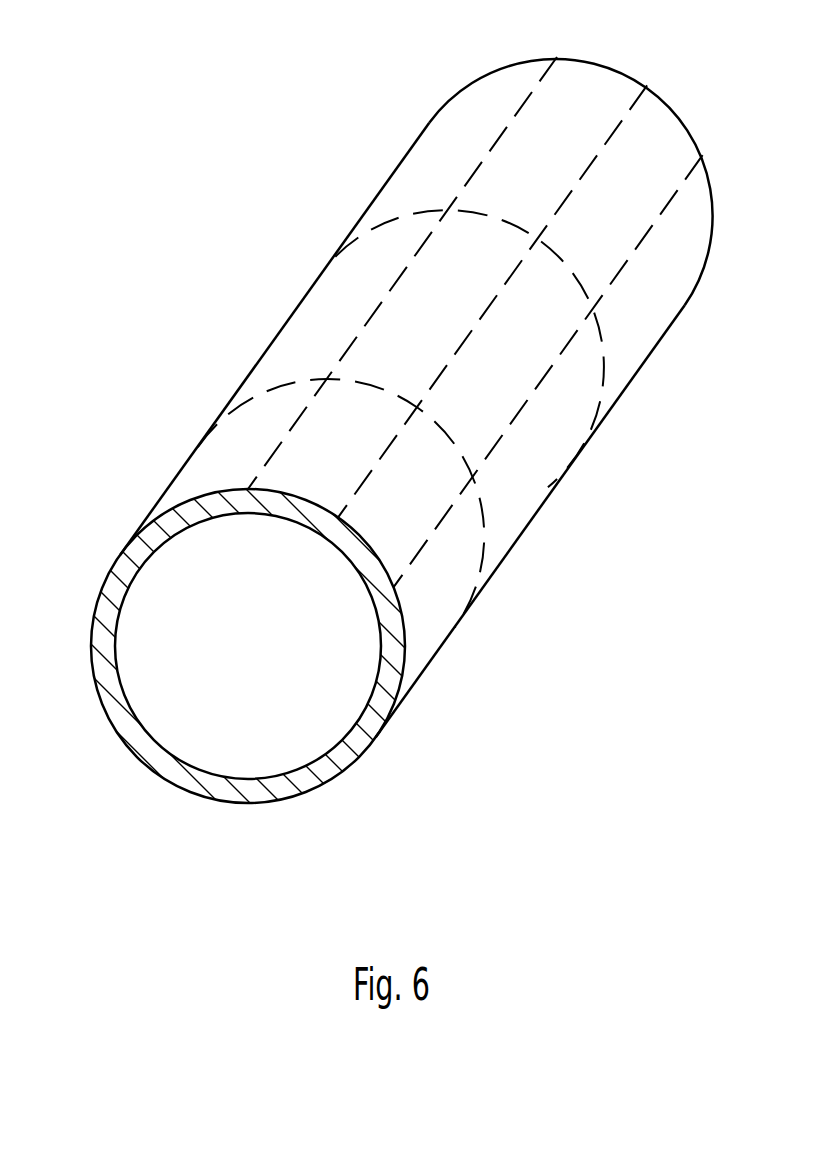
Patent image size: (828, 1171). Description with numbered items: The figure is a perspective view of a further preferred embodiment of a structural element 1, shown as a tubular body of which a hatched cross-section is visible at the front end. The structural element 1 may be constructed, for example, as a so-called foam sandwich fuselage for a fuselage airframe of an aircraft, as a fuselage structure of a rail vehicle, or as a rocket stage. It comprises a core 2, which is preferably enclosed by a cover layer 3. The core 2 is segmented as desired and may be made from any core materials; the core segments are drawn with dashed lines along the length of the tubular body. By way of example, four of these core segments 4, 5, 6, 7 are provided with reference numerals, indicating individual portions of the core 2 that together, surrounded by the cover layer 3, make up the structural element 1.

The structural element 1 is at (124, 142).
The core 2 is at (278, 809).
The cover layer 3 is at (203, 735).
The core segment 4 is at (438, 610).
The core segment 5 is at (317, 312).
The core segment 6 is at (540, 472).
The core segment 7 is at (667, 130).